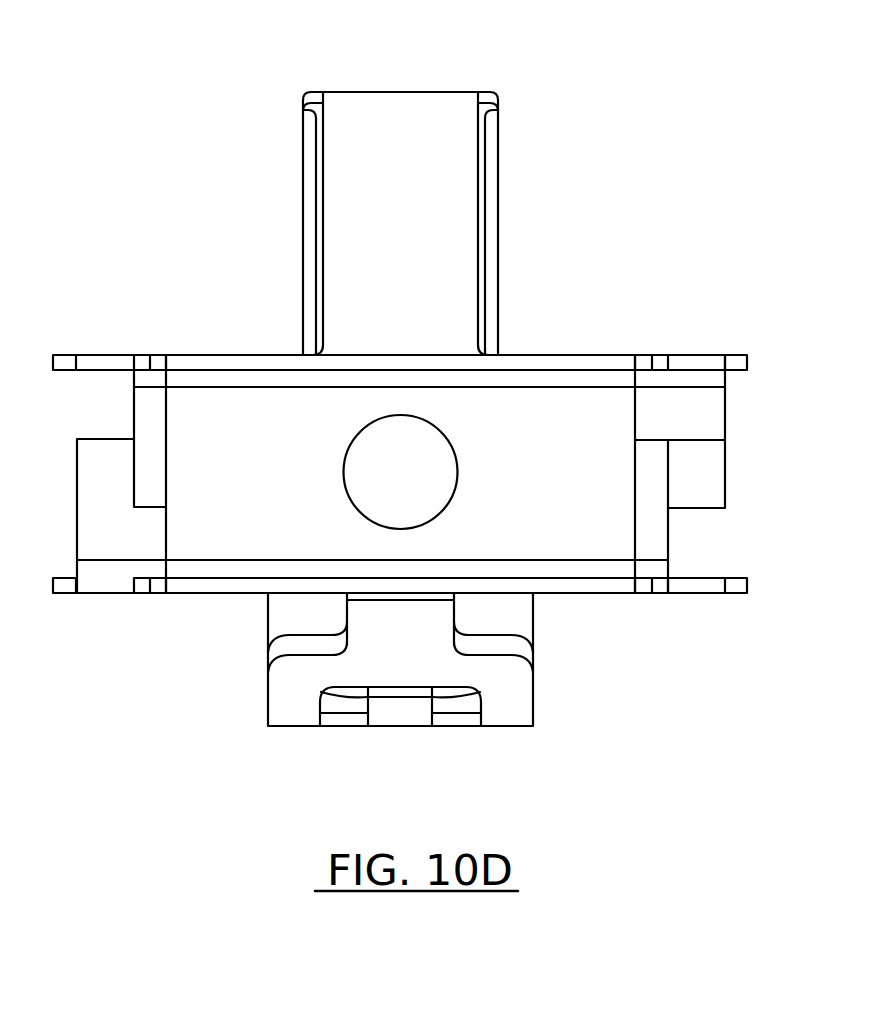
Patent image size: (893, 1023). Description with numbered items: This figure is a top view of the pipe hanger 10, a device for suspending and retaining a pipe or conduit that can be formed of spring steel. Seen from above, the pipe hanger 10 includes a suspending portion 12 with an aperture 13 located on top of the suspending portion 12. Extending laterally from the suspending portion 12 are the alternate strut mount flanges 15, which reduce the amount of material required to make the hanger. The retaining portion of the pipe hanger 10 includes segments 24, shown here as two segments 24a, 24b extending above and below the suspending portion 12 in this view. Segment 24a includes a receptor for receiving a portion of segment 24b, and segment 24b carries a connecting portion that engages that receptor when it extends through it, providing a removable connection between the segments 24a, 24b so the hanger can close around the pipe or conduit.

The pipe hanger 10 is at (602, 115).
The suspending portion 12 is at (540, 355).
The aperture 13 is at (356, 433).
The alternate strut mount flanges 15 is at (134, 420).
The segments 24 is at (392, 409).
The segment 24a is at (268, 690).
The segment 24b is at (498, 192).